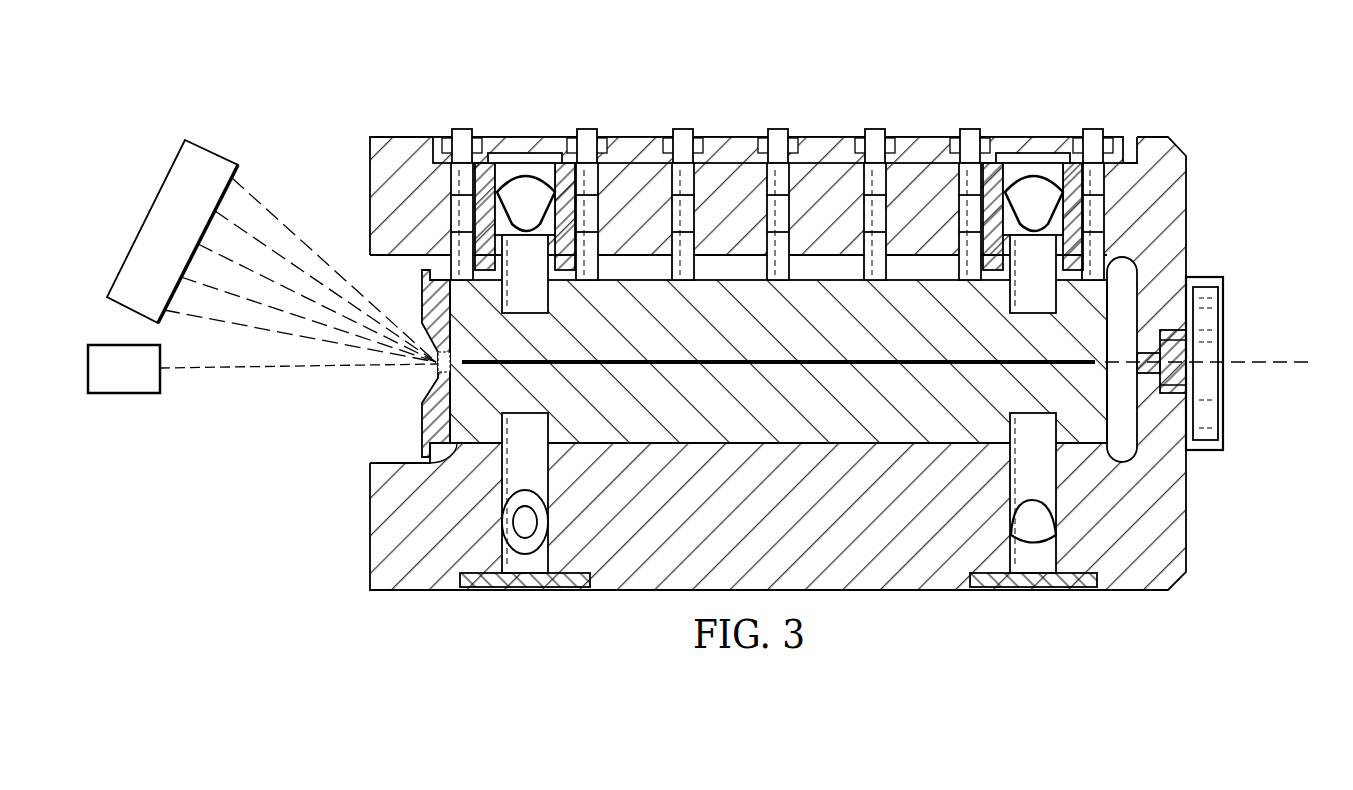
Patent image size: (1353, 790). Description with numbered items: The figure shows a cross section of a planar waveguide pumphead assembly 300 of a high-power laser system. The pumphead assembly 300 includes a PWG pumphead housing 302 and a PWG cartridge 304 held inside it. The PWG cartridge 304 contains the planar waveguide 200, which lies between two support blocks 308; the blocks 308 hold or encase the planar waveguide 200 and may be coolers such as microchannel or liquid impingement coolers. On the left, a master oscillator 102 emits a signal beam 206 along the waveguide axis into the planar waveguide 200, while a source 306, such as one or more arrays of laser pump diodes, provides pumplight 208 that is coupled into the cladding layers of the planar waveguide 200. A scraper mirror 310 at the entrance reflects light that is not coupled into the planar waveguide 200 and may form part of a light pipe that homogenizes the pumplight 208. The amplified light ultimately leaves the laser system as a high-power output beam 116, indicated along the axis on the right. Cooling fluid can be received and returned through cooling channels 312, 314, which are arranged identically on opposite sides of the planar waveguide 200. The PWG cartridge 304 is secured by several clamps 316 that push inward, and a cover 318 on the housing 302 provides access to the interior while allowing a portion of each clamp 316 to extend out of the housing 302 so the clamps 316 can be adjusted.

The master oscillator 102 is at (118, 396).
The high-power output beam 116 is at (1256, 356).
The planar waveguide 200 is at (866, 372).
The signal beam 206 is at (290, 372).
The pumplight 208 is at (303, 207).
The PWG pumphead assembly 300 is at (849, 373).
The PWG pumphead housing 302 is at (906, 591).
The PWG cartridge 304 is at (745, 447).
The source 306 is at (148, 223).
The support blocks 308 is at (757, 333).
The scraper mirror 310 is at (460, 355).
The cooling channel 312 is at (520, 196).
The cooling channel 314 is at (1030, 196).
The clamps 316 is at (875, 125).
The cover 318 is at (733, 134).